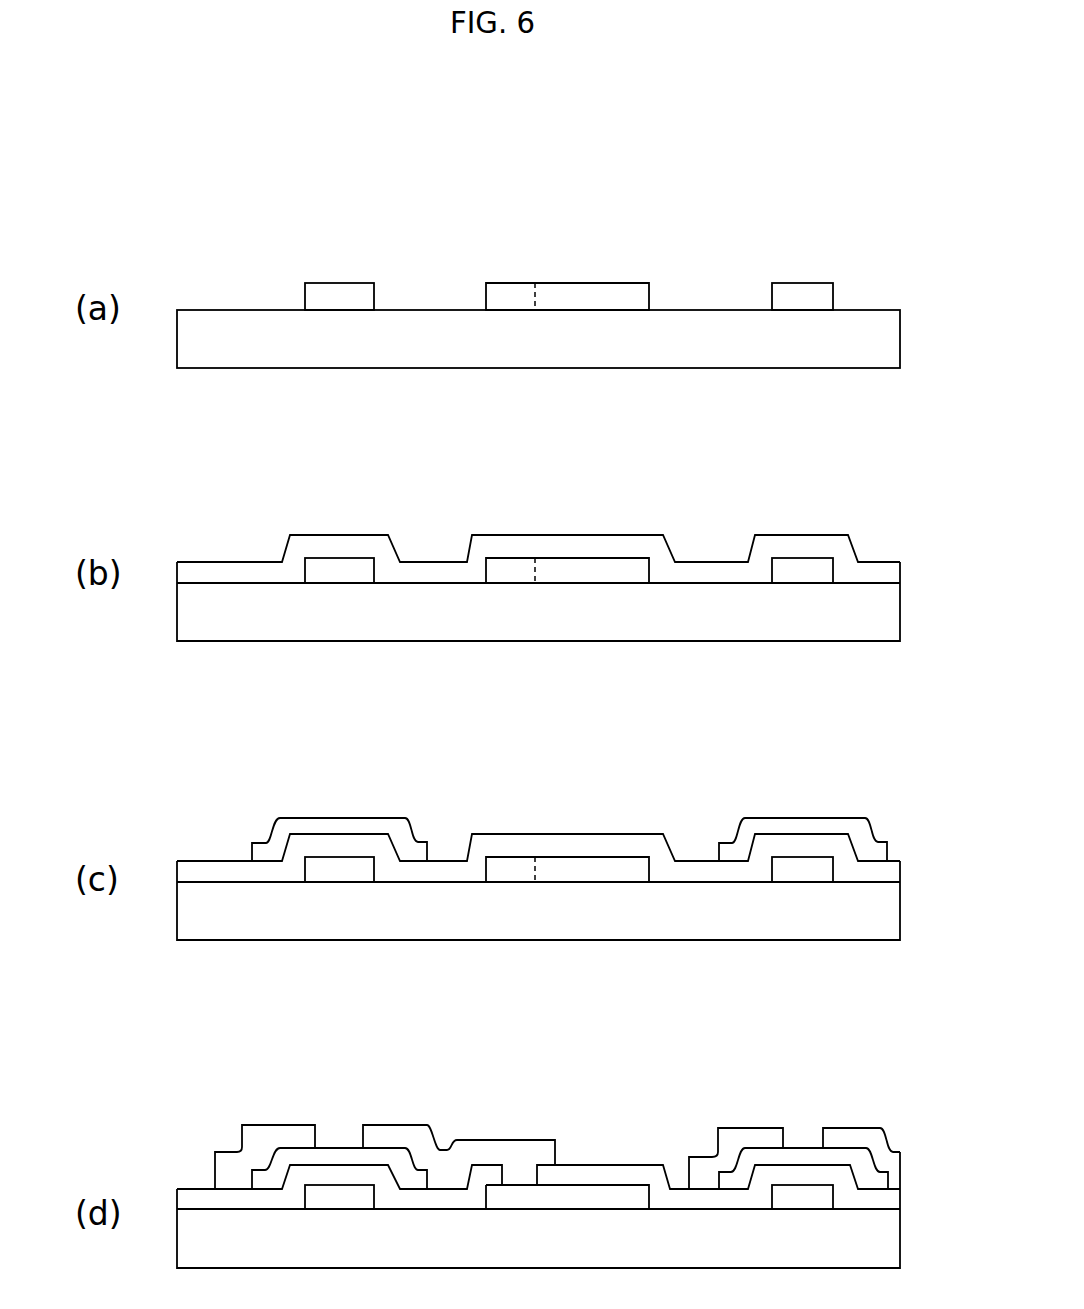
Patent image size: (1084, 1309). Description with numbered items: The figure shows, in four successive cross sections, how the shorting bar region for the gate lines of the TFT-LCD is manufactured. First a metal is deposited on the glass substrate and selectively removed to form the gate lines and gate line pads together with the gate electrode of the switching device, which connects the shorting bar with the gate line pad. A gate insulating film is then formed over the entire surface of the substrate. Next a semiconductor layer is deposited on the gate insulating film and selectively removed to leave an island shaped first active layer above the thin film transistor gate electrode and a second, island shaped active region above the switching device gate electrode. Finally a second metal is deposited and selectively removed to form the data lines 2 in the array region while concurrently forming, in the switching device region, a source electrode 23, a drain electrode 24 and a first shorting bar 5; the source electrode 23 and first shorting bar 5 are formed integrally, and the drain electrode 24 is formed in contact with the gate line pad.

The data line 2 is at (700, 1167).
The first shorting bar 5 is at (225, 1160).
The source electrode 23 is at (278, 1137).
The drain electrode 24 is at (518, 1155).